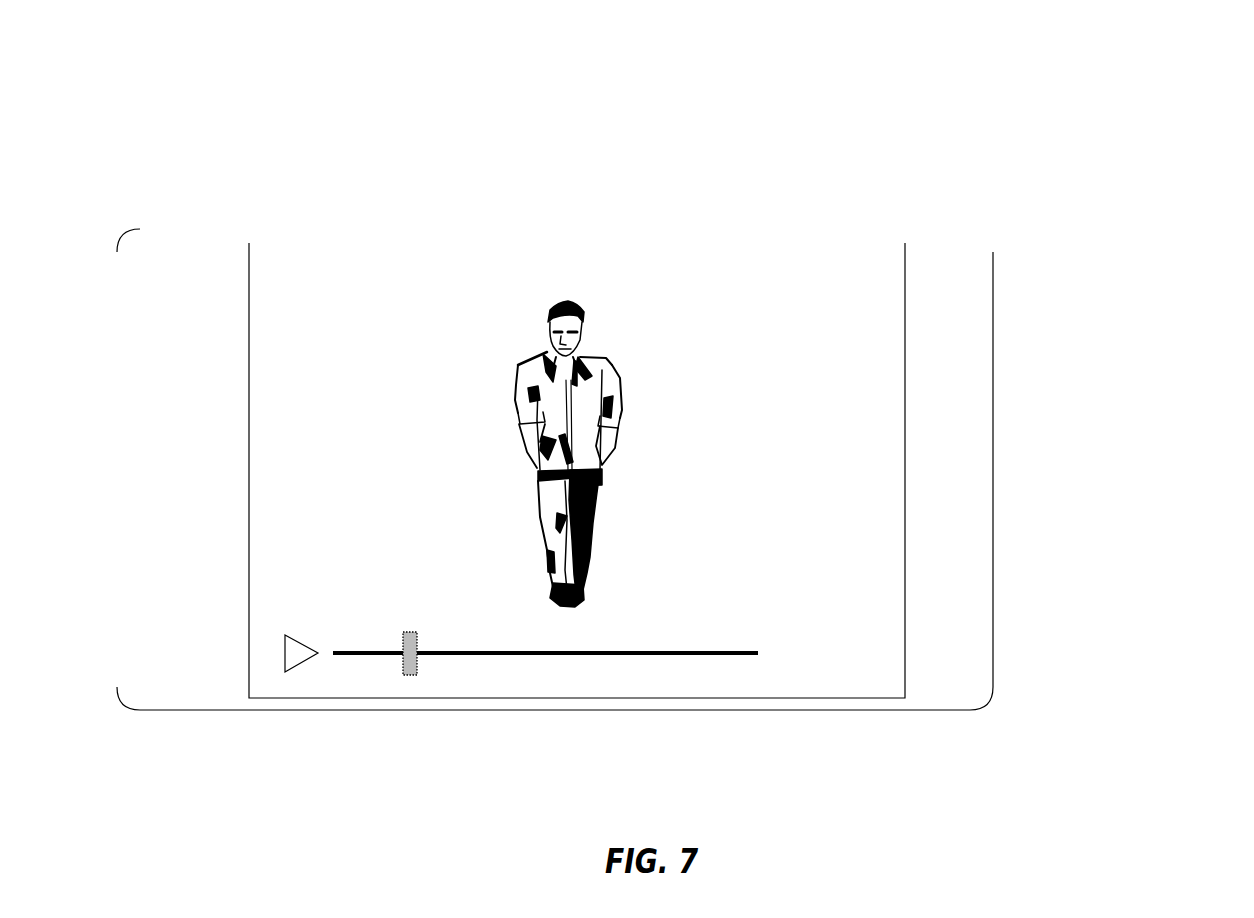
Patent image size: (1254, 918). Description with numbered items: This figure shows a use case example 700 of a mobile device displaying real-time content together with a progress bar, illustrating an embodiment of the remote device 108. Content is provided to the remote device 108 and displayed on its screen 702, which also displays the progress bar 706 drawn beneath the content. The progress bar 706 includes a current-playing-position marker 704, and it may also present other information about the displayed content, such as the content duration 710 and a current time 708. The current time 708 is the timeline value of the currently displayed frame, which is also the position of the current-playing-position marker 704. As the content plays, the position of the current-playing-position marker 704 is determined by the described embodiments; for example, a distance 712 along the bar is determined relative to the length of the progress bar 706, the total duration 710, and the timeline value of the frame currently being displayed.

The example 700 is at (1142, 67).
The remote device 108 is at (987, 373).
The screen 702 is at (905, 270).
The current-playing-position marker 704 is at (410, 676).
The progress bar 706 is at (673, 652).
The current time 708 is at (802, 668).
The content duration 710 is at (860, 668).
The distance 712 is at (402, 735).